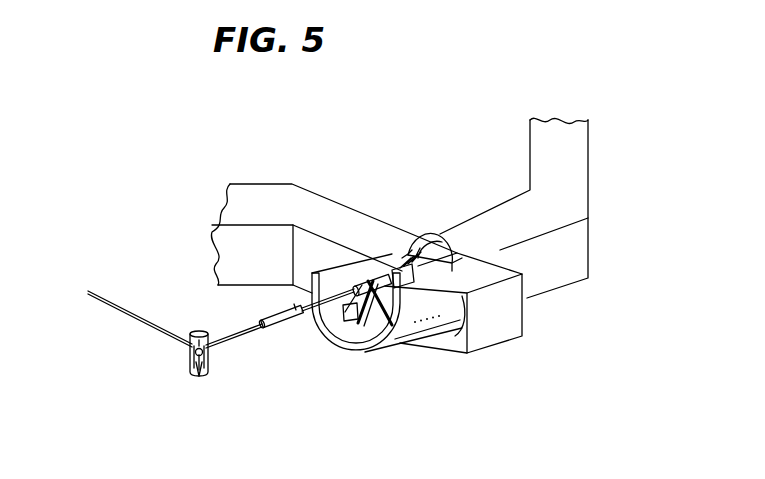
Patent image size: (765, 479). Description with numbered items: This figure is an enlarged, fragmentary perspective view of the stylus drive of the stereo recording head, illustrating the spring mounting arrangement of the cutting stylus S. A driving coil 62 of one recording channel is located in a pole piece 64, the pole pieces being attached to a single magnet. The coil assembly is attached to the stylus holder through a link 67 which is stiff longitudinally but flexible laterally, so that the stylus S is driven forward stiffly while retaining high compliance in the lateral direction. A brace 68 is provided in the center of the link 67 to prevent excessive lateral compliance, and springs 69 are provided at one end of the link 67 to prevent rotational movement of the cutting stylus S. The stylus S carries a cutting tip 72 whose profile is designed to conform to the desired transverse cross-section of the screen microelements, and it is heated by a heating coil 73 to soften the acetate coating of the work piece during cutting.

The driving coil 62 is at (437, 243).
The pole piece 64 is at (563, 277).
The link 67 is at (117, 302).
The brace 68 is at (285, 330).
The spring 69 is at (377, 307).
The cutting tip 72 is at (199, 379).
The heating coil 73 is at (190, 357).
The cutting stylus S is at (208, 353).